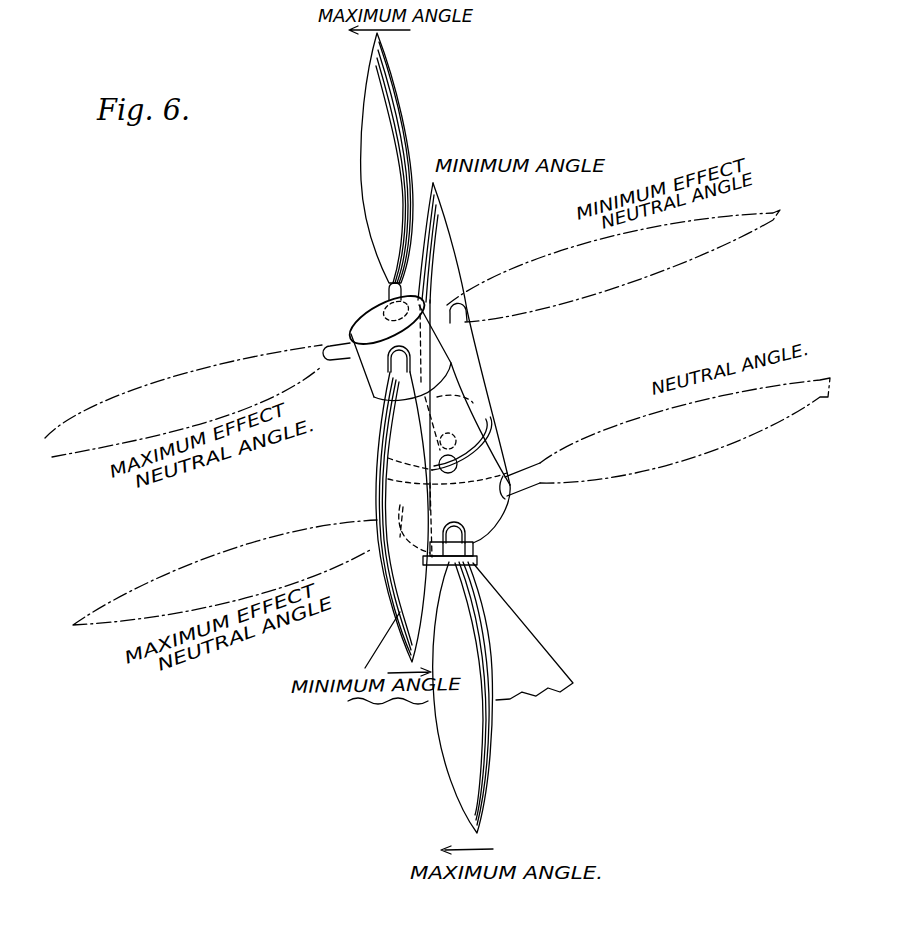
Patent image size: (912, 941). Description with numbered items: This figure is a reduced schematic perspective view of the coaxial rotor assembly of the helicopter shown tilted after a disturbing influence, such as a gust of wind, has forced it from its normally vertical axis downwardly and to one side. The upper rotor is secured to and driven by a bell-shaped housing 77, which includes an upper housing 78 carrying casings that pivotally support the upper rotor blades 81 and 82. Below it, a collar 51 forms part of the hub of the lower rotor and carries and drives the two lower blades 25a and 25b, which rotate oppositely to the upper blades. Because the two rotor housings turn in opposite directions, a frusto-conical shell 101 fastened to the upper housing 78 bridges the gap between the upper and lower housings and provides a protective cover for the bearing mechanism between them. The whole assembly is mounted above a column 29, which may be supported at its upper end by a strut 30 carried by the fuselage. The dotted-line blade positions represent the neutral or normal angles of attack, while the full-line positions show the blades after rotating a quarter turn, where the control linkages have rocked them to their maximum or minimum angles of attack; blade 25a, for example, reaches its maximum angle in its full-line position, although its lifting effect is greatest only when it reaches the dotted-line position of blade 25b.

The upper rotor blade 82 is at (397, 95).
The lower rotor blade 25b is at (457, 243).
The upper housing 78 is at (433, 349).
The bell-shaped housing 77 is at (493, 380).
The frusto-conical shell 101 is at (470, 403).
The collar 51 is at (503, 515).
The column 29 is at (477, 549).
The upper rotor blade 81 is at (380, 485).
The lower rotor blade 25a is at (490, 777).
The strut 30 is at (510, 606).